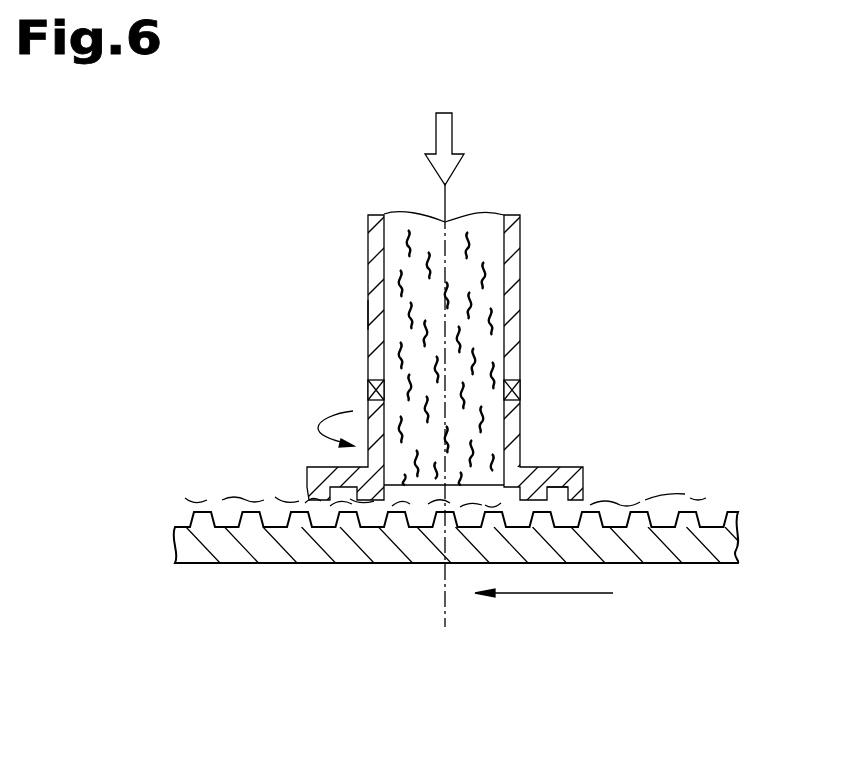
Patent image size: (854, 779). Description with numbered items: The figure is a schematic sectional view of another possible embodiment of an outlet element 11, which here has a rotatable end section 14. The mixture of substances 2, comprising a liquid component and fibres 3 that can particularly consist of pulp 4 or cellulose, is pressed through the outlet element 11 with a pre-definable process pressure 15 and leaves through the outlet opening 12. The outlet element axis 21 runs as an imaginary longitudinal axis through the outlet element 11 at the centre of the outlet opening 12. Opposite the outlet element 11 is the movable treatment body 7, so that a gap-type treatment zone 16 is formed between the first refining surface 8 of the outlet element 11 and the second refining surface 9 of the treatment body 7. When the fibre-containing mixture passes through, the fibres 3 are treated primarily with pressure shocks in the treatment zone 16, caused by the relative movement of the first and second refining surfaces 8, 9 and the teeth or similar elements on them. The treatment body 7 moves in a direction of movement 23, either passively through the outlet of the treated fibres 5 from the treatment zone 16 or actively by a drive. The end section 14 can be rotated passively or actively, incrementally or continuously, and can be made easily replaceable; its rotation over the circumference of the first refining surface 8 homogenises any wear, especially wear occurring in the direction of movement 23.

The mixture of substances 2 is at (390, 308).
The fibres 3 is at (400, 257).
The pulp 4 is at (398, 285).
The treated fibres 5 is at (298, 495).
The movable treatment body 7 is at (692, 555).
The first refining surface 8 is at (537, 508).
The second refining surface 9 is at (679, 502).
The outlet element 11 is at (549, 252).
The outlet opening 12 is at (457, 472).
The rotatable end section 14 is at (306, 444).
The process pressure 15 is at (442, 133).
The treatment zone 16 is at (323, 513).
The outlet element axis 21 is at (443, 184).
The direction of movement 23 is at (569, 603).